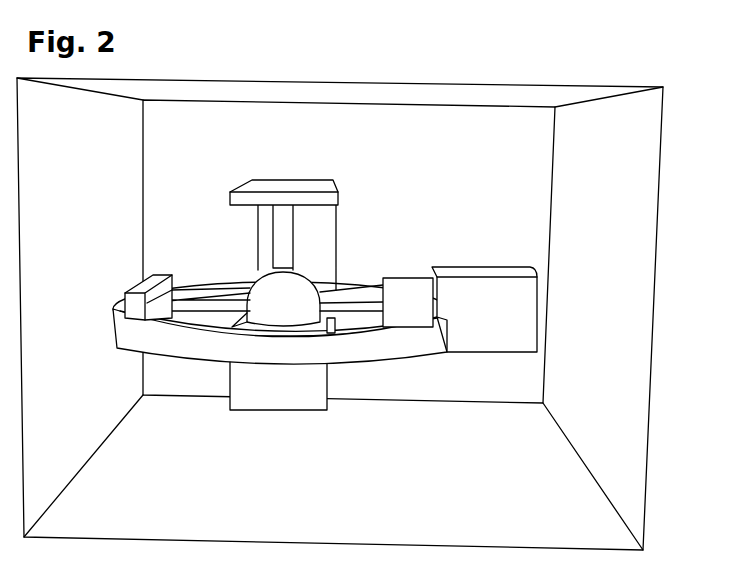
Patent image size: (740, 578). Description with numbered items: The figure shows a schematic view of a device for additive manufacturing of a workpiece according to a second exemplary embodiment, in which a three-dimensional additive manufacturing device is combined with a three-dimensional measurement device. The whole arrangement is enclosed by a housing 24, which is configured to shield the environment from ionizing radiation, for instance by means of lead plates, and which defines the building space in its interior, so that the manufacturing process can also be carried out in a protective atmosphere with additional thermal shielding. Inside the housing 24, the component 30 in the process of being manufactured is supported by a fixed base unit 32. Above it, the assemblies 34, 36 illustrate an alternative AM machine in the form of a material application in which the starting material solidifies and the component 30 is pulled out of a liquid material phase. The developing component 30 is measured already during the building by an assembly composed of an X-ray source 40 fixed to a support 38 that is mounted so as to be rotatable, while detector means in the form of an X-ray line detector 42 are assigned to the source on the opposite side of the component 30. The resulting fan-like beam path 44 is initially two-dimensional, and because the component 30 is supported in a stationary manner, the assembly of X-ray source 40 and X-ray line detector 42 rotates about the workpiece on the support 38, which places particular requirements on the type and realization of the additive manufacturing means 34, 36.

The housing 24 is at (553, 535).
The component 30 is at (285, 283).
The fixed base unit 32 is at (280, 393).
The assembly 34 is at (280, 235).
The assembly 36 is at (290, 187).
The support 38 is at (175, 348).
The X-ray source 40 is at (485, 298).
The X-ray line detector 42 is at (142, 283).
The fan-like beam path 44 is at (183, 288).